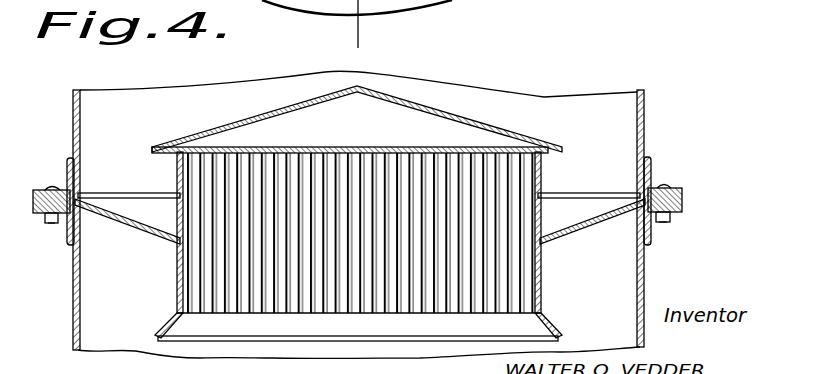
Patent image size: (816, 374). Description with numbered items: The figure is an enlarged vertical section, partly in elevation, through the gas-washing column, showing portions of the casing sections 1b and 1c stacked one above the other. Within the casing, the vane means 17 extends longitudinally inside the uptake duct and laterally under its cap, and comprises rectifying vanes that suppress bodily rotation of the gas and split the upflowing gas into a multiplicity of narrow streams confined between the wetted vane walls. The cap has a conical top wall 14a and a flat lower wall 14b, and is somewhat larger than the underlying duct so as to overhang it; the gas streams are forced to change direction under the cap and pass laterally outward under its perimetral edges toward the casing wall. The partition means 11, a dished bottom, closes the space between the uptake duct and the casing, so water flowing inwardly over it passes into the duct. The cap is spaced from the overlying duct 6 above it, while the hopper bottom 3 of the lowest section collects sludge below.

The casing section 1b is at (645, 273).
The casing section 1c is at (645, 107).
The hopper bottom 3 is at (724, 250).
The uptake duct 6 is at (541, 274).
The partition means 11 is at (140, 227).
The conical top wall 14a is at (429, 110).
The flat lower wall 14b is at (480, 147).
The vane means 17 is at (480, 172).